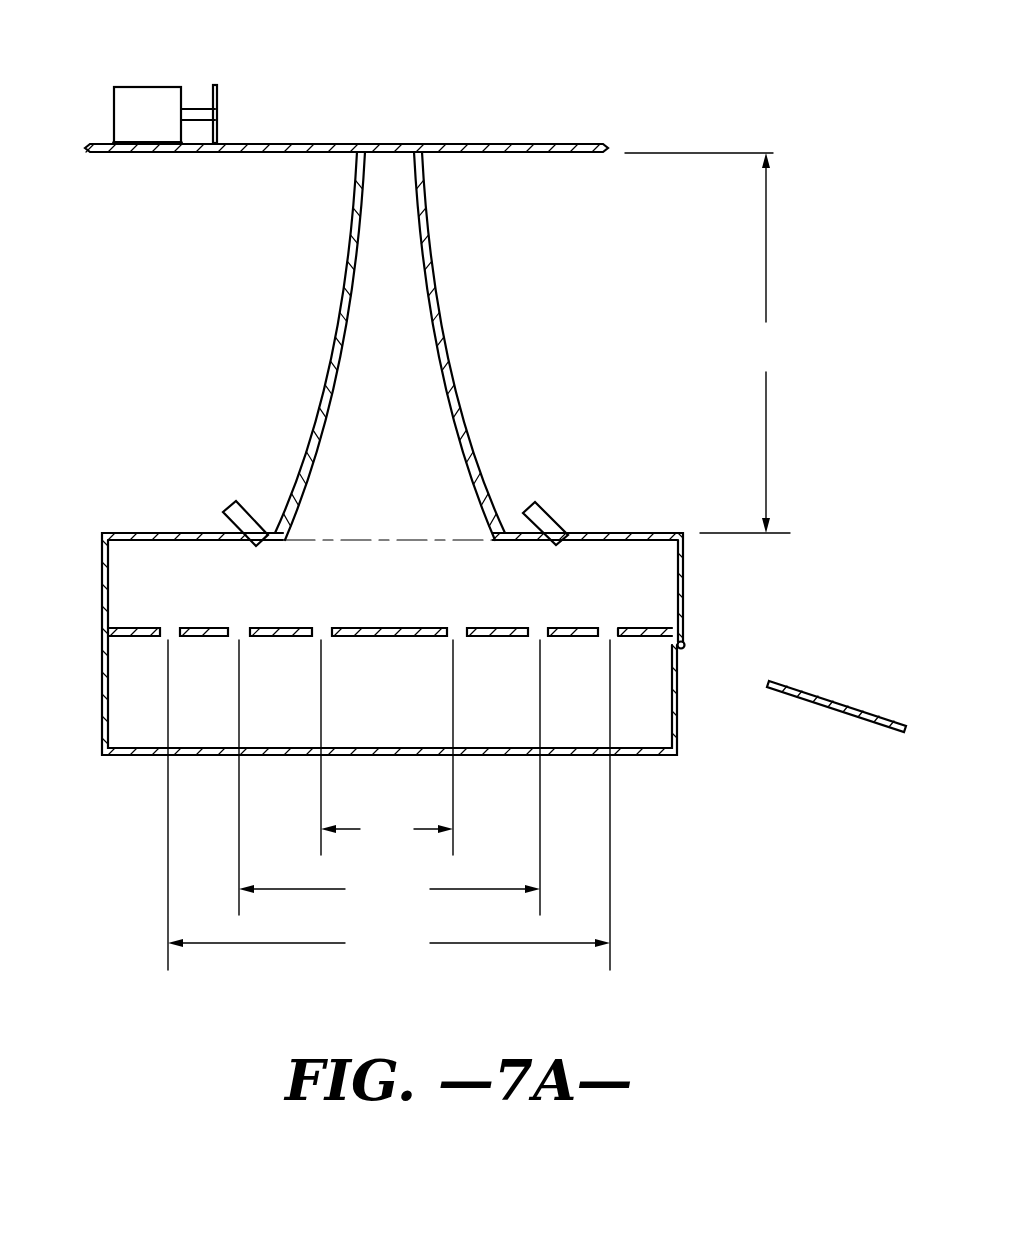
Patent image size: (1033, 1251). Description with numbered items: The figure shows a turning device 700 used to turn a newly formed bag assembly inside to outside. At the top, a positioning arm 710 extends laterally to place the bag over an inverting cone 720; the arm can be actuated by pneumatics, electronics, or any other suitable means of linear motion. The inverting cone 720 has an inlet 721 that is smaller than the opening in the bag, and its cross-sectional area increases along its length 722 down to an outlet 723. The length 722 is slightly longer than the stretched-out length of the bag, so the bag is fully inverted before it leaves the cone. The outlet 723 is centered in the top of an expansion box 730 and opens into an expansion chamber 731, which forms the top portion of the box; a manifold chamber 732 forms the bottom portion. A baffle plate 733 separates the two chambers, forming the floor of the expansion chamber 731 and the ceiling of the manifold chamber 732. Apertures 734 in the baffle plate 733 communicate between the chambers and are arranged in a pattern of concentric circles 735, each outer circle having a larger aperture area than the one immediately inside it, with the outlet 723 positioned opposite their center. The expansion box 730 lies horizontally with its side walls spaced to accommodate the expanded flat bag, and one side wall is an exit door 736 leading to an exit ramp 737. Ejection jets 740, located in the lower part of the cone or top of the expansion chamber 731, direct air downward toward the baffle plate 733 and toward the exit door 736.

The turning device 700 is at (636, 88).
The positioning arm 710 is at (157, 87).
The inverting cone 720 is at (338, 355).
The inlet 721 is at (388, 160).
The length 722 is at (710, 343).
The outlet 723 is at (367, 533).
The expansion box 730 is at (685, 698).
The expansion chamber 731 is at (360, 593).
The manifold chamber 732 is at (360, 728).
The baffle plate 733 is at (138, 637).
The apertures 734 is at (323, 627).
The concentric circles 735 is at (389, 805).
The exit door 736 is at (686, 560).
The exit ramp 737 is at (801, 692).
The ejection jets 740 is at (245, 502).